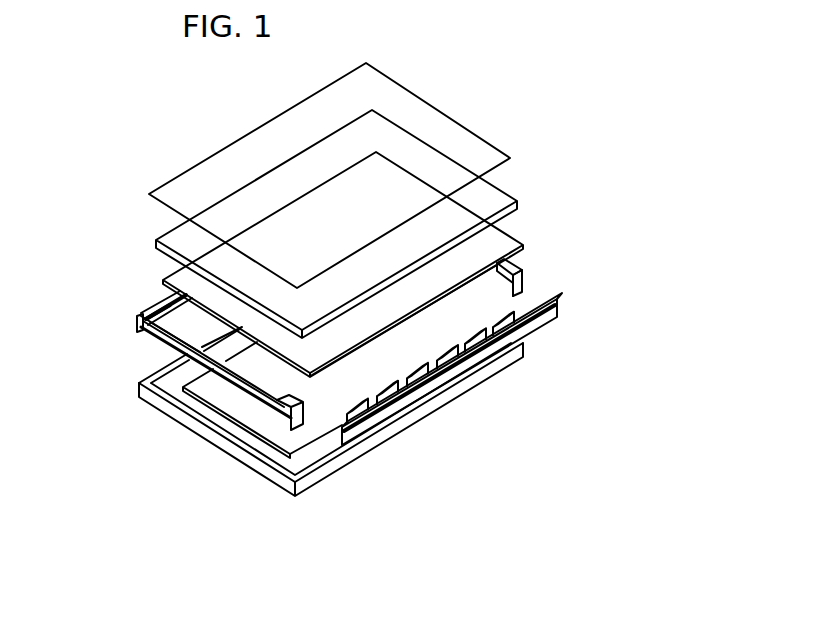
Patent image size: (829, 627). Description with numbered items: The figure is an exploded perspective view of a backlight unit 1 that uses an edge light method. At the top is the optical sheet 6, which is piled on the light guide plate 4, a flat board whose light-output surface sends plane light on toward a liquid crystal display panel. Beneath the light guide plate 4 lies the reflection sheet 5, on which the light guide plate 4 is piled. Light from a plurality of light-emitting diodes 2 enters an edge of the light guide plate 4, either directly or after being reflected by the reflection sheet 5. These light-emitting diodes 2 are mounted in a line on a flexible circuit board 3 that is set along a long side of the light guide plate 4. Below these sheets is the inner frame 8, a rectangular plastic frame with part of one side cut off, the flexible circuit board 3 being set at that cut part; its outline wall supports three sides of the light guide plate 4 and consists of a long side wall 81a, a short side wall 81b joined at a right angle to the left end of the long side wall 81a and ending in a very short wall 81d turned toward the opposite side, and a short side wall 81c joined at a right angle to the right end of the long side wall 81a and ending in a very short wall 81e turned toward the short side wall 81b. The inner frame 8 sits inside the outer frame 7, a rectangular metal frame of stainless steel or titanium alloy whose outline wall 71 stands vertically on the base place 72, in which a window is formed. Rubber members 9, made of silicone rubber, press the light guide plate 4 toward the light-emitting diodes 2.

The backlight unit 1 is at (488, 101).
The light-emitting diodes 2 is at (523, 283).
The flexible circuit board 3 is at (553, 304).
The light guide plate 4 is at (504, 190).
The reflection sheet 5 is at (498, 230).
The optical sheet 6 is at (498, 150).
The outer frame 7 is at (352, 413).
The inner frame 8 is at (380, 361).
The rubber member 9 is at (136, 319).
The outline wall 71 is at (163, 405).
The base place 72 is at (246, 433).
The long side wall 81a is at (157, 304).
The short side wall 81b is at (157, 333).
The short side wall 81c is at (508, 259).
The very short wall 81d is at (298, 430).
The very short wall 81e is at (545, 280).